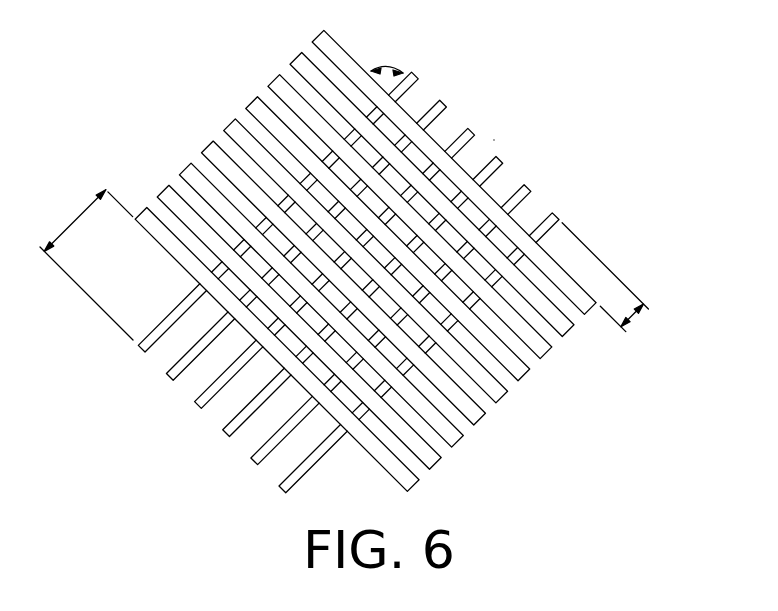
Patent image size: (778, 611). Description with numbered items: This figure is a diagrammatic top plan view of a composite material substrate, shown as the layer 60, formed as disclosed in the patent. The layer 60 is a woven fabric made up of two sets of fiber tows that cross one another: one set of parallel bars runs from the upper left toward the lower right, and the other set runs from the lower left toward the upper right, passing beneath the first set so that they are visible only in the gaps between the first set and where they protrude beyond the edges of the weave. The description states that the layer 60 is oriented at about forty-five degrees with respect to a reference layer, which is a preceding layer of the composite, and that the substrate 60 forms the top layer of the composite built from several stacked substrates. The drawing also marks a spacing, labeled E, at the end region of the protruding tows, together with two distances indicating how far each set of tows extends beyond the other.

The layer 60 is at (176, 119).
The strand spacing dimension E is at (387, 68).